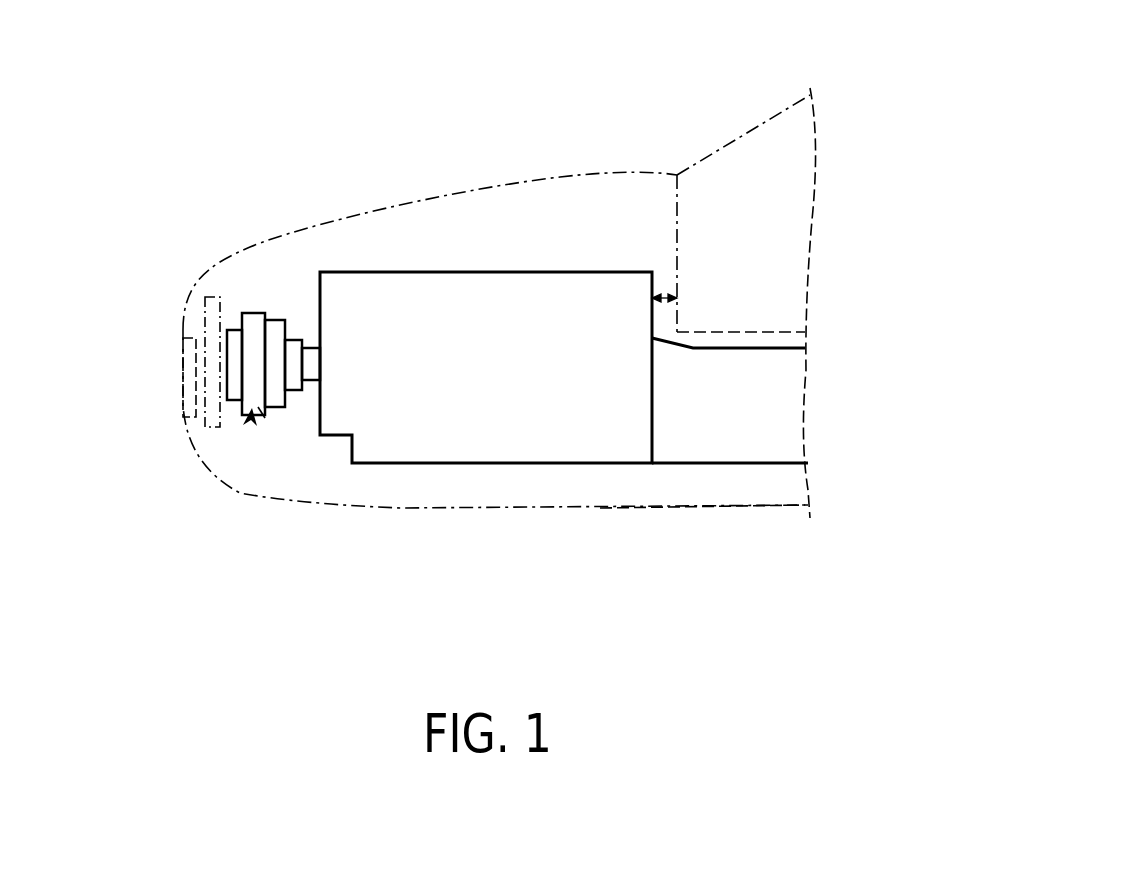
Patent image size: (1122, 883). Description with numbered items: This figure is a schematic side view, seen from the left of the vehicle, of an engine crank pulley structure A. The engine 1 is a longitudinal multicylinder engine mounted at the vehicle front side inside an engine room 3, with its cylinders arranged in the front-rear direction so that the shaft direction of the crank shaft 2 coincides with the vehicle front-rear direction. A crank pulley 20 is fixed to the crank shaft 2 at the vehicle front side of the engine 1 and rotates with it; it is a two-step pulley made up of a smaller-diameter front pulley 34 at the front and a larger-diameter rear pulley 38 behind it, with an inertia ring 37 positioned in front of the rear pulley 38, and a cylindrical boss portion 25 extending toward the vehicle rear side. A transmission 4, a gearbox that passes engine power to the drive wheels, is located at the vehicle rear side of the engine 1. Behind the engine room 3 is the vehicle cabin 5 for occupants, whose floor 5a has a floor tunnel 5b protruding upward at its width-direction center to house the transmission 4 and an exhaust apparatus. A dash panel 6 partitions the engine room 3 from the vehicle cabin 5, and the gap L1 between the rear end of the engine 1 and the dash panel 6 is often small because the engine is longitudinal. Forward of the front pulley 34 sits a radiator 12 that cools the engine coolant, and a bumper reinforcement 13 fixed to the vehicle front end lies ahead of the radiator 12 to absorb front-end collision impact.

The engine 1 is at (390, 290).
The crank shaft 2 is at (310, 363).
The engine room 3 is at (557, 230).
The transmission 4 is at (790, 400).
The vehicle cabin 5 is at (783, 170).
The floor 5a is at (757, 332).
The floor tunnel 5b is at (732, 485).
The dash panel 6 is at (680, 235).
The radiator 12 is at (210, 296).
The bumper reinforcement 13 is at (188, 378).
The crank pulley 20 is at (252, 323).
The boss portion 25 is at (295, 392).
The front pulley 34 is at (234, 395).
The inertia ring 37 is at (265, 415).
The rear pulley 38 is at (278, 400).
The engine crank pulley structure A is at (250, 418).
The gap L1 is at (667, 296).